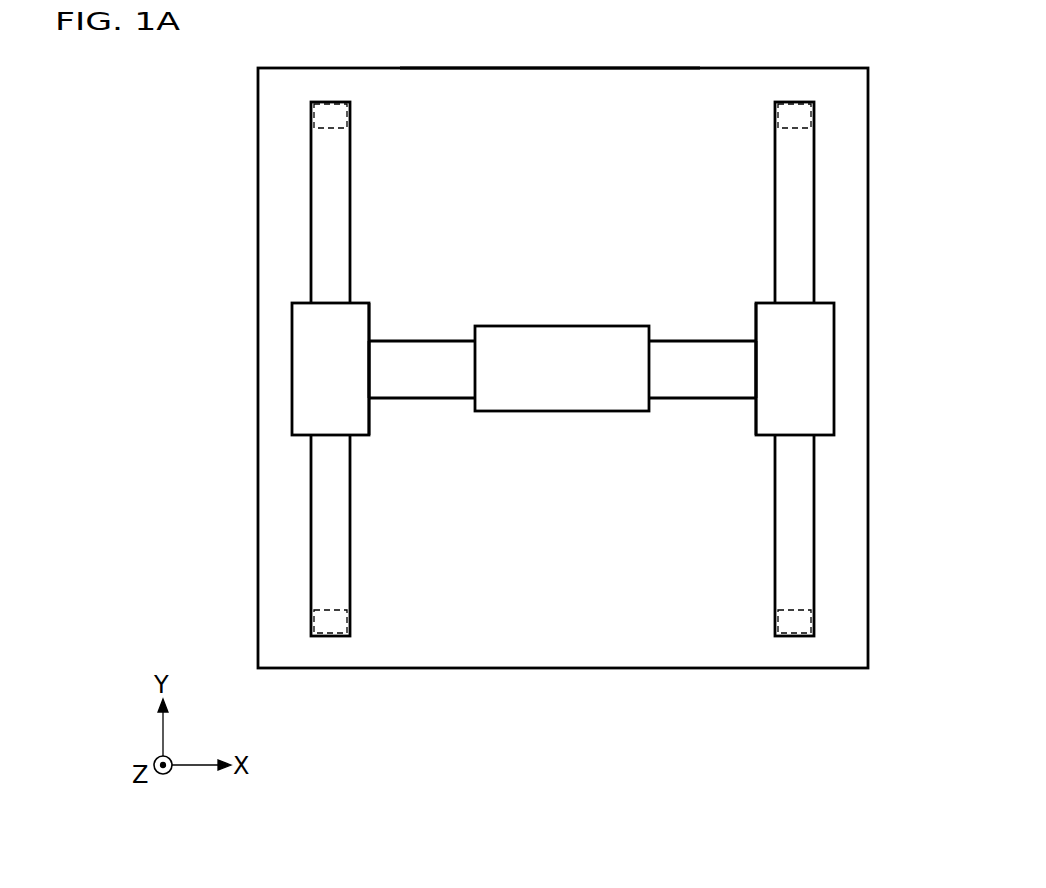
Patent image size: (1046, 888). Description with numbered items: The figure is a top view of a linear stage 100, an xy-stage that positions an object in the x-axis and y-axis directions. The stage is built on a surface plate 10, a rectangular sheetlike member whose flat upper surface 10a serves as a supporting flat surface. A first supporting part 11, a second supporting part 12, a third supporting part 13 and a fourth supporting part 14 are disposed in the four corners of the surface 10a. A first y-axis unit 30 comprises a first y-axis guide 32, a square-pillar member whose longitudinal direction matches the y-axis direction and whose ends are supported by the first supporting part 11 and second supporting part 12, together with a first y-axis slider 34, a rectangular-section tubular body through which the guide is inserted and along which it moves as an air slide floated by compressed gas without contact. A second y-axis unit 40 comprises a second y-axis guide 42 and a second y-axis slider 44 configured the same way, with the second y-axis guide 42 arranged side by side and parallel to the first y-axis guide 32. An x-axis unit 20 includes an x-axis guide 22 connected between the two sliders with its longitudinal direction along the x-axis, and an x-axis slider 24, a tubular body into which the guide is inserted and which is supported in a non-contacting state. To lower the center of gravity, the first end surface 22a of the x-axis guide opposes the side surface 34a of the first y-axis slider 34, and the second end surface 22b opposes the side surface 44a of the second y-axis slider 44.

The linear stage 100 is at (590, 731).
The surface plate 10 is at (722, 67).
The surface 10a is at (631, 84).
The first supporting part 11 is at (792, 610).
The second supporting part 12 is at (787, 128).
The third supporting part 13 is at (335, 610).
The fourth supporting part 14 is at (335, 127).
The x-axis unit 20 is at (527, 301).
The x-axis guide 22 is at (685, 340).
The first end surface 22a is at (756, 375).
The second end surface 22b is at (369, 375).
The x-axis slider 24 is at (583, 326).
The first y-axis unit 30 is at (845, 270).
The first y-axis guide 32 is at (815, 205).
The first y-axis slider 34 is at (834, 343).
The side surface 34a is at (756, 418).
The second y-axis unit 40 is at (281, 272).
The second y-axis guide 42 is at (311, 183).
The second y-axis slider 44 is at (292, 343).
The side surface 44a is at (369, 418).